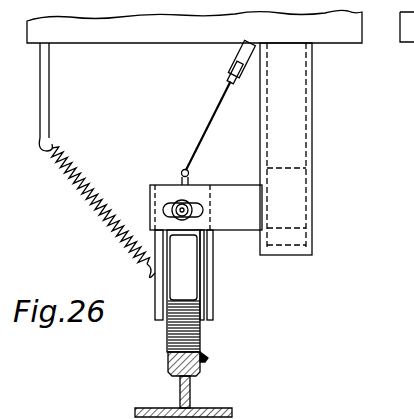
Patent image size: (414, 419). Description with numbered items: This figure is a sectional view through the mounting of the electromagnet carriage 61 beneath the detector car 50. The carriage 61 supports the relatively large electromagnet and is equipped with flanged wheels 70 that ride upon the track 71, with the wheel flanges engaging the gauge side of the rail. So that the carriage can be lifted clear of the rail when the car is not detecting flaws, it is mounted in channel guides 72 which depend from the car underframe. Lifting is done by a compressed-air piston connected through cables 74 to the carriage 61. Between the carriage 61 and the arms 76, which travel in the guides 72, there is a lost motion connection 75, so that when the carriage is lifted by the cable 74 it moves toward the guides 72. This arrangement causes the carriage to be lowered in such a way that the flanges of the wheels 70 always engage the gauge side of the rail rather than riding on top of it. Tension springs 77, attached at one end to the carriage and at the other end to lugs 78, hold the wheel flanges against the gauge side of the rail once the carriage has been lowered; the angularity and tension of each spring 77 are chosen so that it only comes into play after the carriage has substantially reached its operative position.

The detector car 50 is at (335, 33).
The channel guides 72 is at (297, 108).
The lugs 78 is at (51, 103).
The tension springs 77 is at (88, 174).
The cables 74 is at (203, 124).
The arms 76 is at (237, 193).
The lost motion connection 75 is at (195, 204).
The electromagnet carriage 61 is at (216, 271).
The flanged wheels 70 is at (168, 338).
The track 71 is at (176, 381).